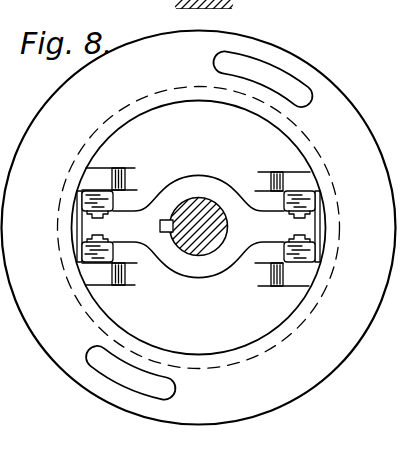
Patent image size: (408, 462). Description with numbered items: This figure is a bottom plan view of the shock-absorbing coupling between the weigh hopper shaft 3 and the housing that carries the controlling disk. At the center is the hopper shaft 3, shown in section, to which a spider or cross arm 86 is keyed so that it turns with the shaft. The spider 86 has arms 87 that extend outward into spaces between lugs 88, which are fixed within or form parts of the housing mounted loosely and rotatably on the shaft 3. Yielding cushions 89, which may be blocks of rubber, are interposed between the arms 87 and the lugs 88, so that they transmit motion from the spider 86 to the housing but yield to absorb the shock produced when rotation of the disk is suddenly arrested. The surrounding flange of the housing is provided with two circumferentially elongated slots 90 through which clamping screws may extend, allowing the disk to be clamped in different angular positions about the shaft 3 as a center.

The hopper shaft 3 is at (187, 245).
The spider or cross arm 86 is at (167, 187).
The arms 87 is at (320, 239).
The lugs 88 is at (293, 174).
The yielding cushions 89 is at (316, 203).
The circumferentially elongated slots 90 is at (293, 83).